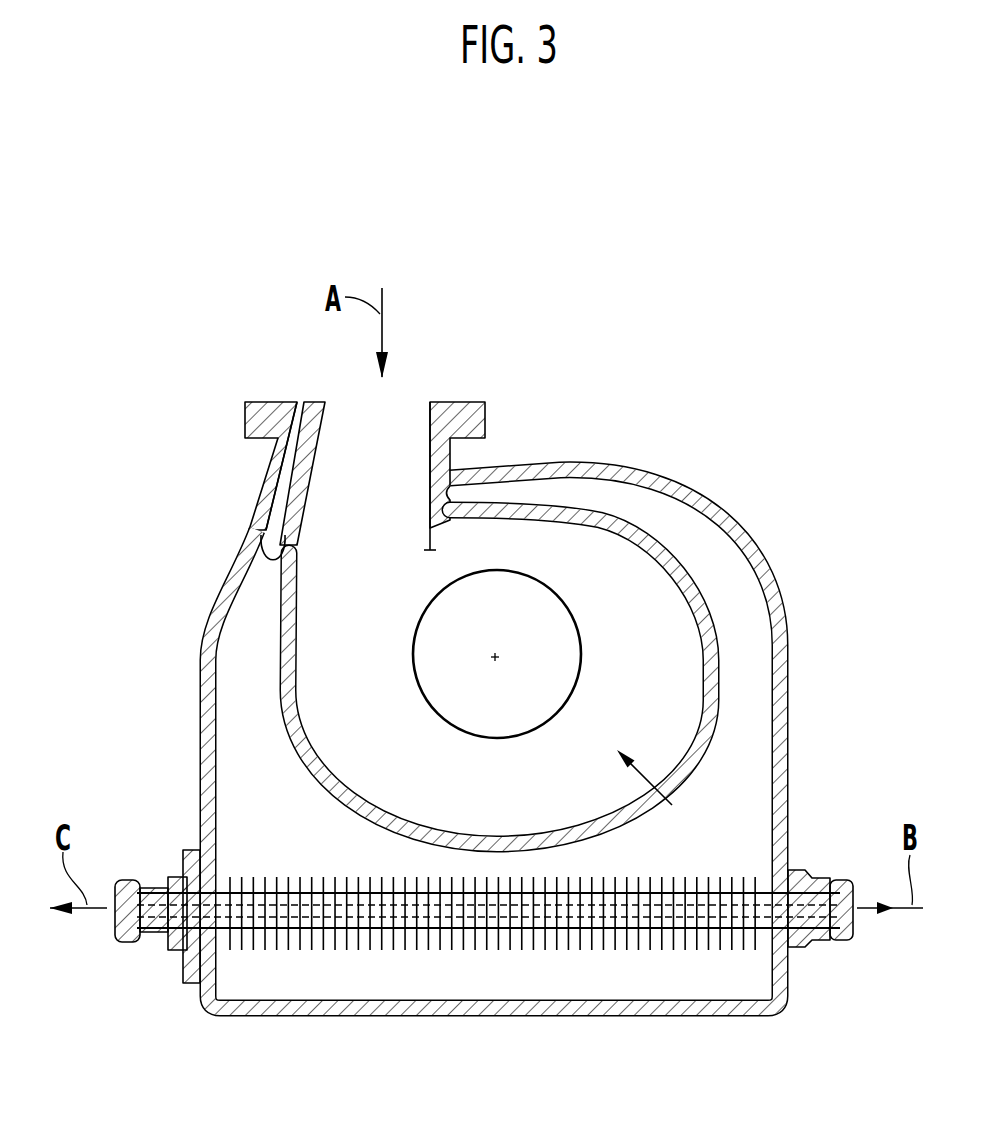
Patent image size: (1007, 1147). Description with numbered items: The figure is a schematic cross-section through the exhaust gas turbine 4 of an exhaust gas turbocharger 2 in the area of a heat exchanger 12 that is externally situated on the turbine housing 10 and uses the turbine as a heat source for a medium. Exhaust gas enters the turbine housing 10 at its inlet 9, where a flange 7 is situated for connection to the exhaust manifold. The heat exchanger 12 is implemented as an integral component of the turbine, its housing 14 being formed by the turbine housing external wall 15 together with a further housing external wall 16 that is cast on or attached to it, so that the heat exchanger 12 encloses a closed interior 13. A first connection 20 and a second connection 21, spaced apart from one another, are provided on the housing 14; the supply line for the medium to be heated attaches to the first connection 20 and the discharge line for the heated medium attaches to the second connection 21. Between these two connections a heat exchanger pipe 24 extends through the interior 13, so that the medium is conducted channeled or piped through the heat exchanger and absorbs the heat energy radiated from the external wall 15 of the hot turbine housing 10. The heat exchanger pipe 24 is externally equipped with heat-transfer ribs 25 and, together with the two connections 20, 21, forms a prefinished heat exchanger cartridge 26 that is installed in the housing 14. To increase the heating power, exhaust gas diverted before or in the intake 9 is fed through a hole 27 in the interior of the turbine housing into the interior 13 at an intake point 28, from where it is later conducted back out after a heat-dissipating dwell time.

The exhaust gas turbocharger 2 is at (665, 460).
The exhaust gas turbine 4 is at (540, 649).
The flange 7 is at (485, 420).
The inlet 9 is at (430, 428).
The turbine housing 10 is at (654, 795).
The heat exchanger 12 is at (490, 978).
The interior 13 is at (563, 975).
The housing 14 is at (388, 1028).
The turbine housing external wall 15 is at (685, 742).
The further housing external wall 16 is at (690, 1018).
The first connection 20 is at (818, 880).
The second connection 21 is at (155, 888).
The heat exchanger pipe 24 is at (624, 928).
The heat-transfer ribs 25 is at (331, 952).
The heat exchanger cartridge 26 is at (545, 965).
The hole 27 is at (313, 445).
The intake point 28 is at (295, 565).